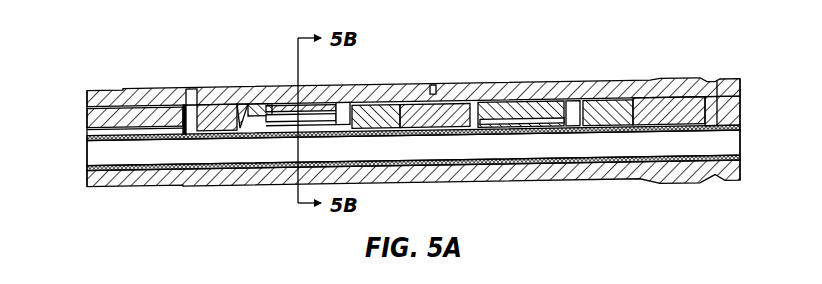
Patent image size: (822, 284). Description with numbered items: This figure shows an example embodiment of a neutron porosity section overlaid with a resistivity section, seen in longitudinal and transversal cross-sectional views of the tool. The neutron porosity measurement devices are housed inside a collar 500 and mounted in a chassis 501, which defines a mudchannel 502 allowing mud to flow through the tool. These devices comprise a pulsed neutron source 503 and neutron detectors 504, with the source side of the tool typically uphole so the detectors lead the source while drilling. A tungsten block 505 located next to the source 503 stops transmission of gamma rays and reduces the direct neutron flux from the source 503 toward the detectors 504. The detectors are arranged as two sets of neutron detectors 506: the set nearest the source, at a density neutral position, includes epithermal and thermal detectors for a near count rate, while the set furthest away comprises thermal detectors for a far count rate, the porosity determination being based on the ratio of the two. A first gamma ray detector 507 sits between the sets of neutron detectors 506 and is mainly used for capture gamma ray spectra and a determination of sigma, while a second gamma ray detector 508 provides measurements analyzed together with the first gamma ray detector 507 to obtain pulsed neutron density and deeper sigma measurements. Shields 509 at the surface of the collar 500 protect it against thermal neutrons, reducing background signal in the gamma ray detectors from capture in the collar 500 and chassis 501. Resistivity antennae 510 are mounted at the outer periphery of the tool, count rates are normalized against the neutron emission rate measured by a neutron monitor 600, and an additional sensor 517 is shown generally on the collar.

The collar 500 is at (719, 83).
The chassis 501 is at (742, 127).
The mudchannel 502 is at (742, 147).
The pulsed neutron source 503 is at (137, 118).
The neutron detectors 504 is at (284, 100).
The tungsten block 505 is at (210, 105).
The sets of neutron detectors 506 is at (283, 122).
The first gamma ray detector 507 is at (400, 104).
The second gamma ray detector 508 is at (674, 84).
The shields 509 is at (340, 108).
The resistivity antennae 510 is at (86, 90).
The additional sensor 517 is at (433, 93).
The neutron monitor 600 is at (188, 91).